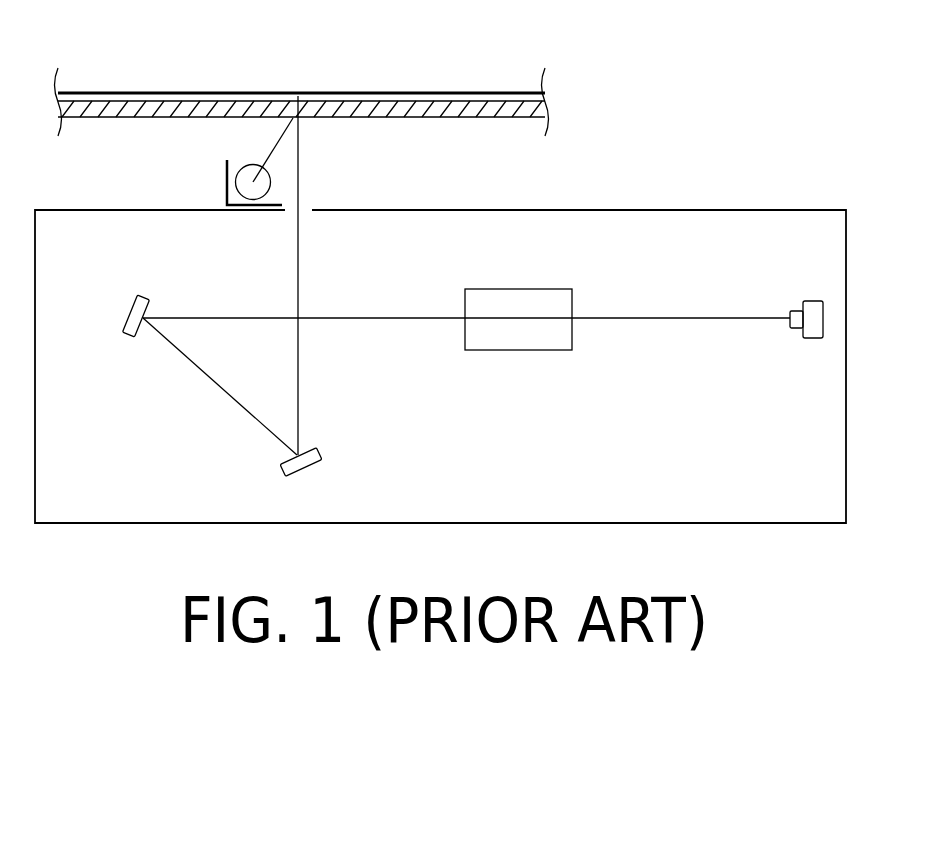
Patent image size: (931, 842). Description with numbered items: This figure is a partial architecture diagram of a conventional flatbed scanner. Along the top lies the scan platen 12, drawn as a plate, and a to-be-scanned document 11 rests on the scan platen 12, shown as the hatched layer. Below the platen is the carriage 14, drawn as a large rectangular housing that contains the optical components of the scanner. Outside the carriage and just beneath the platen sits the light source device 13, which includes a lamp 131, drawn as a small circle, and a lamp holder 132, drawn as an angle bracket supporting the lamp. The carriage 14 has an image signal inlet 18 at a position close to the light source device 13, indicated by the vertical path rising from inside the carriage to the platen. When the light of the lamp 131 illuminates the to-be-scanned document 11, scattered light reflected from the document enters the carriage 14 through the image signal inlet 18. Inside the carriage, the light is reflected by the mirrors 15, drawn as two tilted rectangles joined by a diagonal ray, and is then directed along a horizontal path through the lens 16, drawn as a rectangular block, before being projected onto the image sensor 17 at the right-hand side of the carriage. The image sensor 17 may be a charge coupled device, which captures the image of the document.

The to-be-scanned document 11 is at (358, 92).
The scan platen 12 is at (452, 107).
The light source device 13 is at (181, 109).
The lamp 131 is at (253, 182).
The lamp holder 132 is at (225, 183).
The carriage 14 is at (717, 223).
The mirrors 15 is at (280, 468).
The lens 16 is at (520, 343).
The image sensor 17 is at (795, 328).
The image signal inlet 18 is at (305, 208).